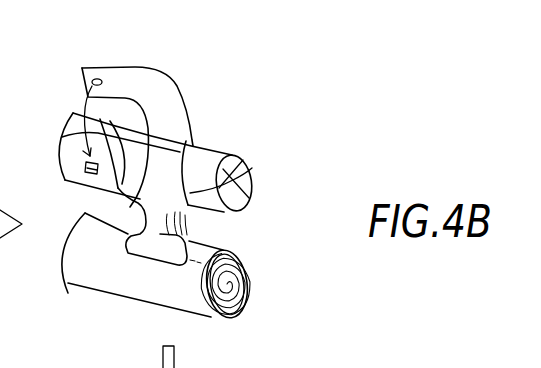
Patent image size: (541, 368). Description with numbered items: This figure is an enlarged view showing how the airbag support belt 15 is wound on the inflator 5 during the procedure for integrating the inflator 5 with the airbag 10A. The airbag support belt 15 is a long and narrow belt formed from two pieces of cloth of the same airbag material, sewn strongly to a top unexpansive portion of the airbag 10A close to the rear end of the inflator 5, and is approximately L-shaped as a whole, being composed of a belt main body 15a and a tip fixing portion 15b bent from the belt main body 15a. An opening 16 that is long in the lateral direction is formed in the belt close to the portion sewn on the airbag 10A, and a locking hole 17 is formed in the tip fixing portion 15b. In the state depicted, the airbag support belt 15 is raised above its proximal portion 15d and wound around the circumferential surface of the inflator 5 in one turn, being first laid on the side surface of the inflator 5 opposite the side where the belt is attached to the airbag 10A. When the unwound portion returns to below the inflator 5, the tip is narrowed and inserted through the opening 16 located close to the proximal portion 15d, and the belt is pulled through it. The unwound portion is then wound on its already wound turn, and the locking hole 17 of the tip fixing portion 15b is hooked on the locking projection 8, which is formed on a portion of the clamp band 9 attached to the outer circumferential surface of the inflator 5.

The inflator 5 is at (226, 150).
The locking projection 8 is at (92, 170).
The clamp band 9 is at (62, 137).
The airbag 10A is at (157, 288).
The airbag support belt 15 is at (190, 151).
The belt main body 15a is at (255, 171).
The tip fixing portion 15b is at (137, 65).
The proximal portion 15d is at (192, 247).
The opening 16 is at (188, 238).
The locking hole 17 is at (98, 78).